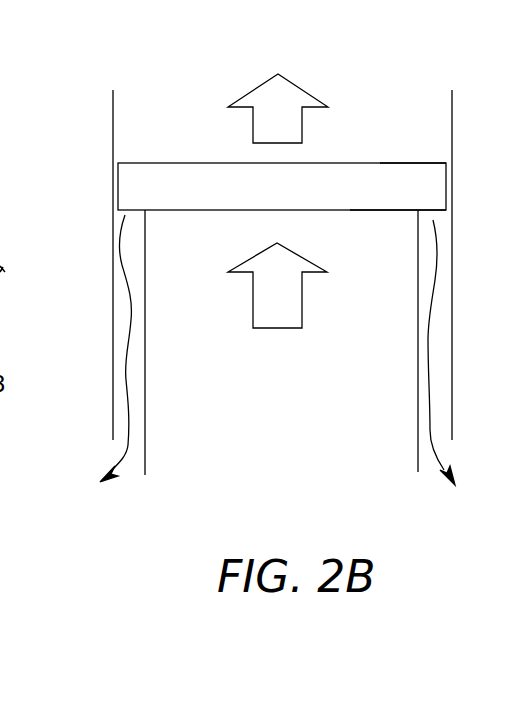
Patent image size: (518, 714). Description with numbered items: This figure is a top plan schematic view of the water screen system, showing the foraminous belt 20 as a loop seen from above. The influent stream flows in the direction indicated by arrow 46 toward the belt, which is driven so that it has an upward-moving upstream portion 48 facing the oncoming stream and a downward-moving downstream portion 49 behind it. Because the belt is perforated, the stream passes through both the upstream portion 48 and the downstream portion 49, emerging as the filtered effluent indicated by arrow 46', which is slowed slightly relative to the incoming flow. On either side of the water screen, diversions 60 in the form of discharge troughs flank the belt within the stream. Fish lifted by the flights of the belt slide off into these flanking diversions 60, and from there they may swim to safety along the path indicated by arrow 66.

The plate member 20 is at (205, 176).
The arrow indicating stream flow direction 46 is at (283, 313).
The arrow indicating filtered effluent 46' is at (303, 109).
The upstream portion 48 is at (395, 212).
The downstream portion 49 is at (408, 163).
The diversion 60 is at (436, 318).
The arrow indicating fish swimming to safety 66 is at (125, 452).